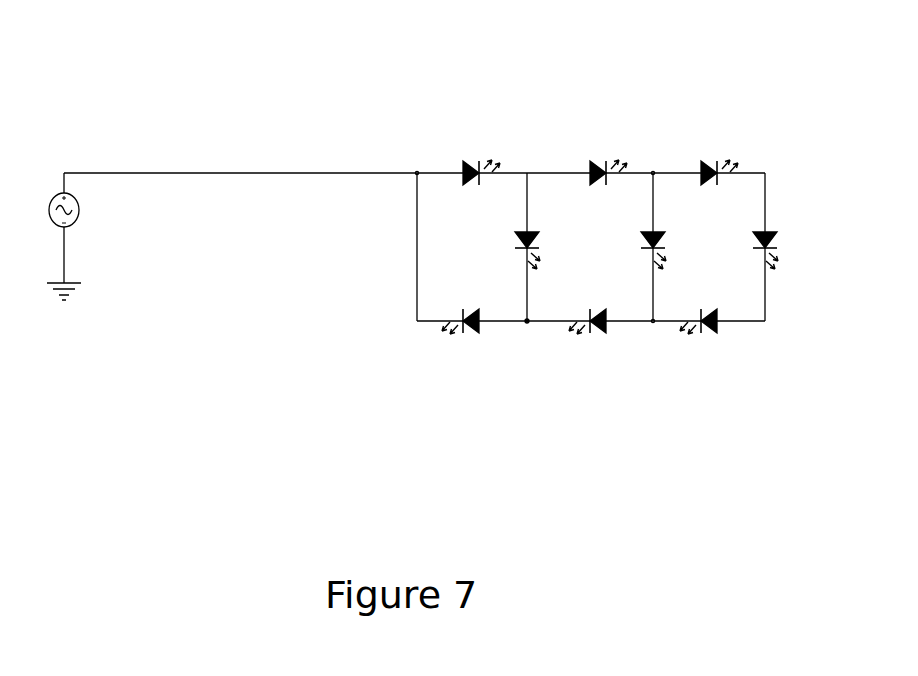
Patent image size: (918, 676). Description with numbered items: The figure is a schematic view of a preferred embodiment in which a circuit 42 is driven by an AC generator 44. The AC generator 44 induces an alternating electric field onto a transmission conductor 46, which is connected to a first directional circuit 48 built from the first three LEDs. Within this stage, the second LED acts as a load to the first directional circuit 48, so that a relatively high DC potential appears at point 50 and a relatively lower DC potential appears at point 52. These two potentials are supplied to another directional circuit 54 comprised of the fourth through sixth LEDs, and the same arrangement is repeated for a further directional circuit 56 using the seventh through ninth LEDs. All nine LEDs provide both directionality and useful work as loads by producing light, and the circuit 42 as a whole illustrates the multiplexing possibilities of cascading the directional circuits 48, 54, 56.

The circuit 42 is at (320, 108).
The AC generator 44 is at (67, 172).
The transmission conductor 46 is at (252, 178).
The first directional circuit 48 is at (415, 275).
The point 50 is at (527, 173).
The point 52 is at (527, 321).
The directional circuit 54 is at (602, 212).
The directional circuit 56 is at (720, 279).